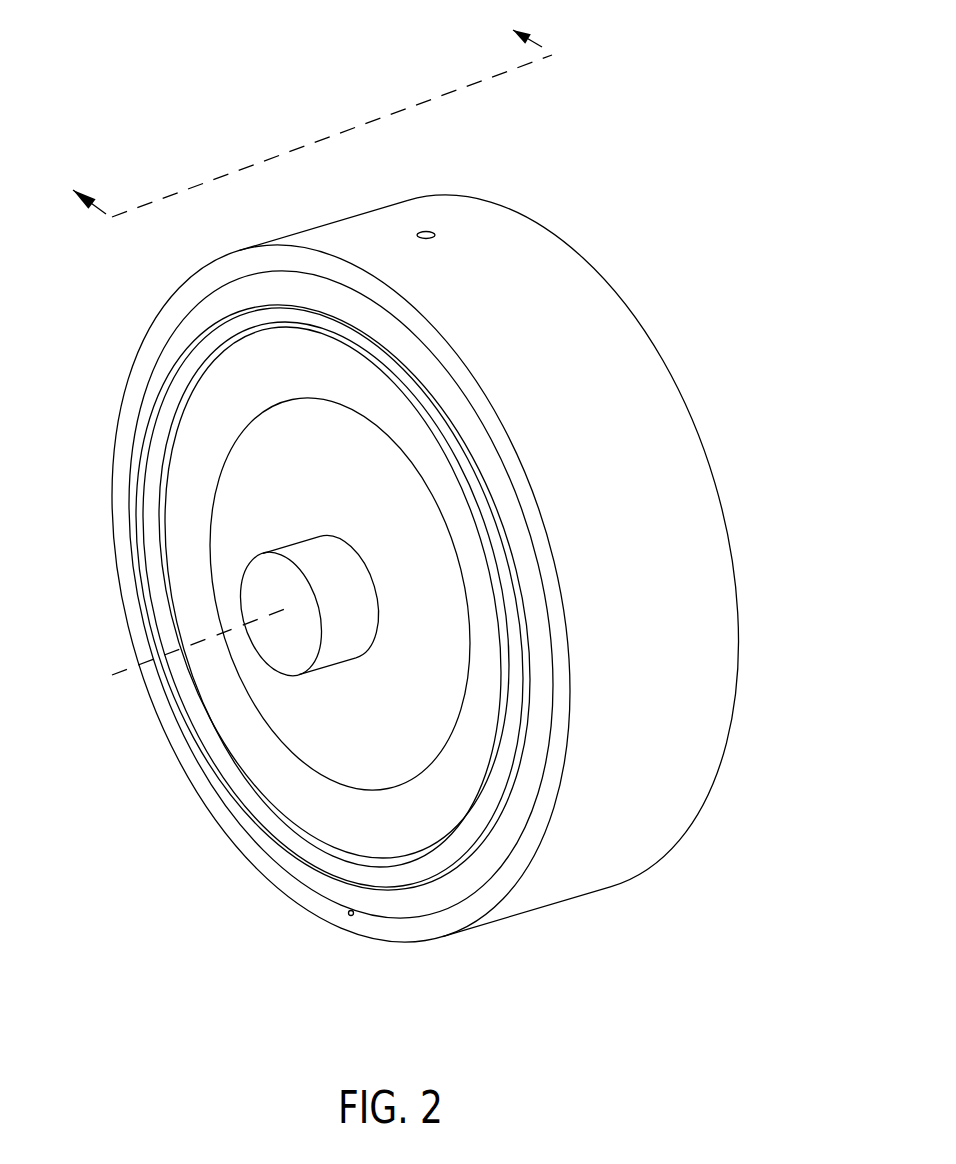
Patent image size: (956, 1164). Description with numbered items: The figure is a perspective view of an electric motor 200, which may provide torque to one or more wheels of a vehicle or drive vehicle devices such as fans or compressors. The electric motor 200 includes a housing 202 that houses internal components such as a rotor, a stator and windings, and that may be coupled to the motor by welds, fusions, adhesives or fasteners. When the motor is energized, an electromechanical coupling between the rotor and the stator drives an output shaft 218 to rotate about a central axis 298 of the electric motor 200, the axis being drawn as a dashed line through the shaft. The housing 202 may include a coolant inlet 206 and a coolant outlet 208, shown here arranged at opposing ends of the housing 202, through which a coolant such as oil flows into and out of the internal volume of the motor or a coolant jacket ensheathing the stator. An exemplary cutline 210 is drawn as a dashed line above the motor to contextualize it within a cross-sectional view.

The electric motor 200 is at (631, 175).
The housing 202 is at (487, 237).
The coolant inlet 206 is at (424, 228).
The coolant outlet 208 is at (350, 916).
The cutline 210 is at (193, 183).
The output shaft 218 is at (333, 628).
The central axis 298 is at (112, 674).